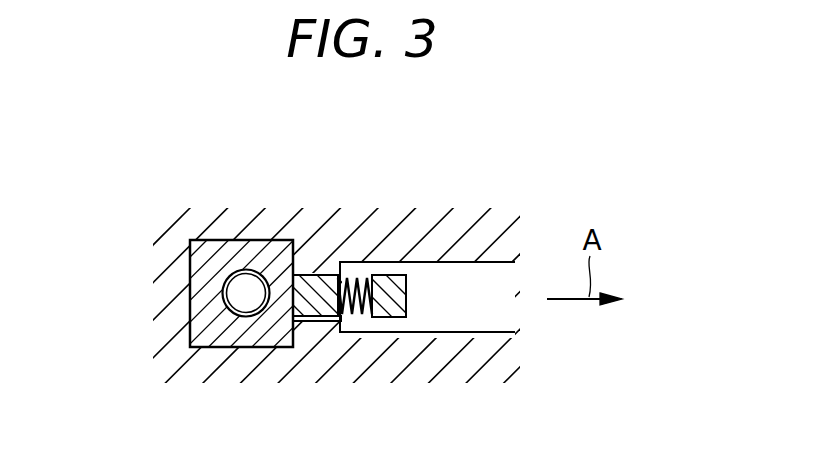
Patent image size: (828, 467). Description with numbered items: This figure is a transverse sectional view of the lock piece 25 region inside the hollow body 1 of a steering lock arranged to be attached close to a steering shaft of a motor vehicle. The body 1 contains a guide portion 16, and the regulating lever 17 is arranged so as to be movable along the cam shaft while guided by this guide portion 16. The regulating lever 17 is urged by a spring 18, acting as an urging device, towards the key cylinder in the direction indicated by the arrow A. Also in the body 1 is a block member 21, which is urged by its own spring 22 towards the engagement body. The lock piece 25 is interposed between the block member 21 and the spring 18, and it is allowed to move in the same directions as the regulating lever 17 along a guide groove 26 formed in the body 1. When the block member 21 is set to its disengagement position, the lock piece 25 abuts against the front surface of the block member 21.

The body 1 is at (185, 212).
The guide portion 16 is at (483, 321).
The regulating lever 17 is at (397, 276).
The spring 18 is at (365, 276).
The block member 21 is at (213, 340).
The spring 22 is at (222, 280).
The lock piece 25 is at (318, 275).
The guide groove 26 is at (325, 322).